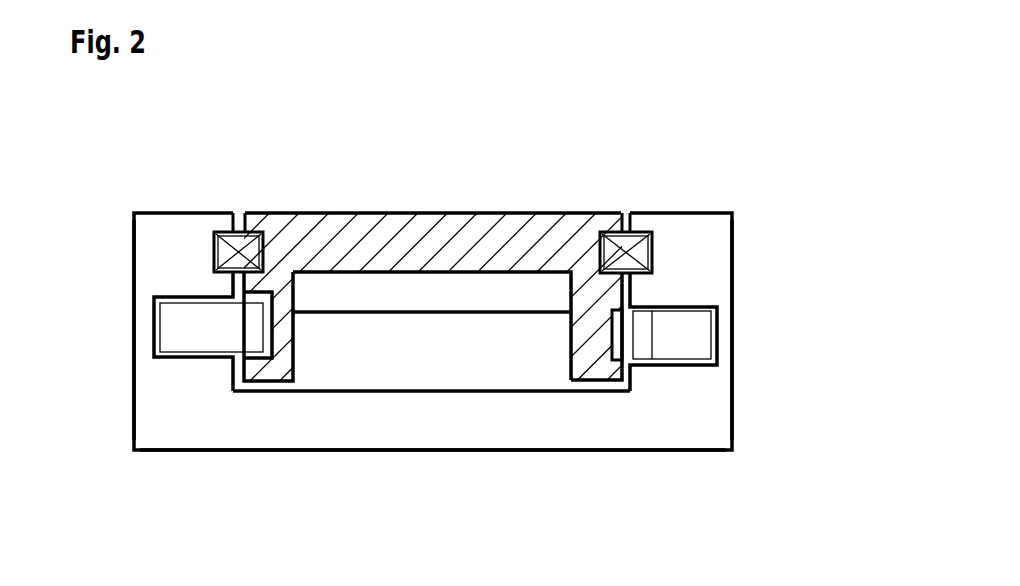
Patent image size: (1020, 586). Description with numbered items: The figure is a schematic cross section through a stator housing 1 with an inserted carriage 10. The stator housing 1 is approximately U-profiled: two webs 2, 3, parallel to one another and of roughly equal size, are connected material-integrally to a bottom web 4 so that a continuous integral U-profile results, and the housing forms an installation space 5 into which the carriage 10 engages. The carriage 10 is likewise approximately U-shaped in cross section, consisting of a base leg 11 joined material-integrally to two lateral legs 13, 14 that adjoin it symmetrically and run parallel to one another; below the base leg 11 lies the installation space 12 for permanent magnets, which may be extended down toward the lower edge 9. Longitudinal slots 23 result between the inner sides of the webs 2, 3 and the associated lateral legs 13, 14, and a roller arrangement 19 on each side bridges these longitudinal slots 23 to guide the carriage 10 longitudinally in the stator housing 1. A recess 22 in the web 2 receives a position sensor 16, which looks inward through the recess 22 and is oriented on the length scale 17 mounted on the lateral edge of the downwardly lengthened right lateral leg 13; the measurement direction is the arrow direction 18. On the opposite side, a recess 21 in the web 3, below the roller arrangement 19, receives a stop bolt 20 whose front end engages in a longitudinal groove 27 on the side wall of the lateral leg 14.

The stator housing 1 is at (740, 415).
The web 2 is at (693, 240).
The web 3 is at (177, 255).
The bottom web 4 is at (357, 418).
The installation space 5 is at (415, 353).
The lower edge 9 is at (463, 312).
The carriage 10 is at (455, 198).
The base leg 11 is at (313, 243).
The installation space 12 is at (370, 296).
The lateral leg 13 is at (588, 337).
The lateral leg 14 is at (282, 343).
The position sensor 16 is at (675, 327).
The length scale 17 is at (615, 330).
The arrow direction 18 is at (635, 337).
The roller arrangement 19 is at (233, 253).
The stop bolt 20 is at (215, 327).
The recess 21 is at (197, 300).
The recess 22 is at (650, 310).
The longitudinal slot 23 is at (238, 213).
The longitudinal groove 27 is at (268, 333).